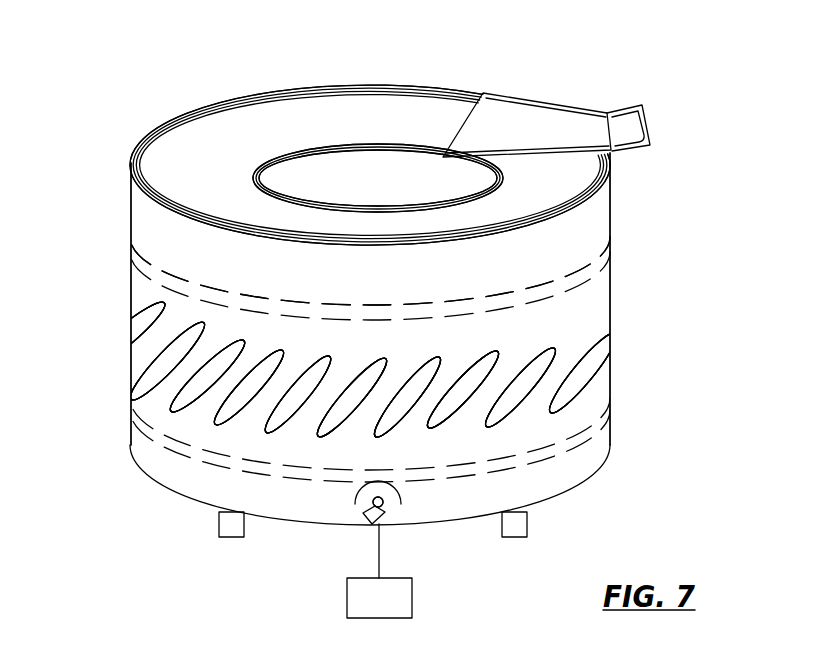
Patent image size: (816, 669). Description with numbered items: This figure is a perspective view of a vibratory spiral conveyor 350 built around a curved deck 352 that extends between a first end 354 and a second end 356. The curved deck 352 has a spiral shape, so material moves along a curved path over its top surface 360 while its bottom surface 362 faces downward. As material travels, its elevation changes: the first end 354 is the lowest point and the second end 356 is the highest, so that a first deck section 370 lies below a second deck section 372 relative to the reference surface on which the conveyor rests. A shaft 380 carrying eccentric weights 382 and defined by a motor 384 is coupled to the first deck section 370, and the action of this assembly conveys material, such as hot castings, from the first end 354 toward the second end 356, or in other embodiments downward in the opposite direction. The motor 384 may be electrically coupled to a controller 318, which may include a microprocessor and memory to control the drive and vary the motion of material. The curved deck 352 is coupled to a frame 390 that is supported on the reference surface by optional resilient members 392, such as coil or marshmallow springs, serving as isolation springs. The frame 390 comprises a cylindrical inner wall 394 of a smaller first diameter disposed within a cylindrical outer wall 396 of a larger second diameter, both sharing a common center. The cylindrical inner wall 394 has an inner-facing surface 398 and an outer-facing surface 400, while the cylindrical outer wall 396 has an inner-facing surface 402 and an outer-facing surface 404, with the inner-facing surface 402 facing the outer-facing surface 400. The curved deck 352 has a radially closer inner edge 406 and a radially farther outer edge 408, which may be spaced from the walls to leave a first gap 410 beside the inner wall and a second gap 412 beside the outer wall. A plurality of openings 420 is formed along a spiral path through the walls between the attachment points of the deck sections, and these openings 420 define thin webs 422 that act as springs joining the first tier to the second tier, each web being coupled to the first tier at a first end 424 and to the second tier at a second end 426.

The controller 318 is at (400, 592).
The spiral conveyor 350 is at (434, 39).
The curved deck 352 is at (449, 115).
The first end 354 is at (616, 360).
The second end 356 is at (630, 122).
The top surface 360 is at (338, 302).
The bottom surface 362 is at (308, 316).
The first deck section 370 is at (607, 417).
The second deck section 372 is at (606, 259).
The shaft 380 is at (385, 520).
The eccentric weights 382 is at (372, 520).
The motor 384 is at (360, 508).
The frame 390 is at (125, 283).
The resilient members 392 is at (228, 523).
The cylindrical inner wall 394 is at (308, 152).
The cylindrical outer wall 396 is at (186, 124).
The inner-facing surface of inner wall 398 is at (336, 158).
The outer-facing surface of inner wall 400 is at (297, 142).
The inner-facing surface of outer wall 402 is at (188, 134).
The outer-facing surface of outer wall 404 is at (168, 112).
The inner edge 406 is at (367, 140).
The outer edge 408 is at (375, 88).
The first gap 410 is at (277, 160).
The second gap 412 is at (142, 150).
The openings 420 is at (165, 357).
The webs 422 is at (165, 385).
The first end of web 424 is at (213, 340).
The second end of web 426 is at (160, 402).